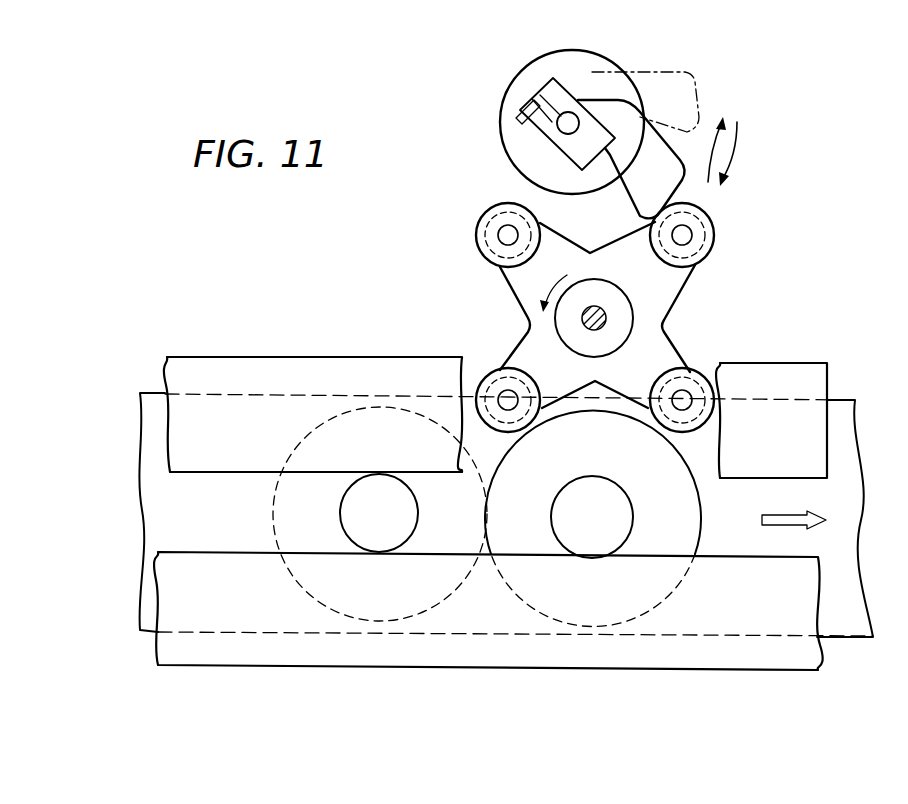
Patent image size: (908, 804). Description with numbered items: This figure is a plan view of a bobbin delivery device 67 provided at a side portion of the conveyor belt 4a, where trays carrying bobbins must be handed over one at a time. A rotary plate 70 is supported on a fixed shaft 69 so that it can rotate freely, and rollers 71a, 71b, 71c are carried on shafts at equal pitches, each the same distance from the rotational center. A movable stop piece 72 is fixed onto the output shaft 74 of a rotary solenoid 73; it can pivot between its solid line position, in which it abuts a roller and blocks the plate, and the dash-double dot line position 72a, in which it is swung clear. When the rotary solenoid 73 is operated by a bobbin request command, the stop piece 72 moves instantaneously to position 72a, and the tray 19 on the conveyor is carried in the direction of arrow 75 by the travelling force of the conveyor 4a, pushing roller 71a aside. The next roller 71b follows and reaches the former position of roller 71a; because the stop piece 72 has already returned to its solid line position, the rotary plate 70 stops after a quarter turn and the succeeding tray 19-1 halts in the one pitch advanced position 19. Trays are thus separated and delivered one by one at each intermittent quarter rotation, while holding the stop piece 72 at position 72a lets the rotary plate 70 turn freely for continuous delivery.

The conveyor belt 4a is at (155, 490).
The tray 19 is at (695, 530).
The succeeding tray 19-1 is at (443, 550).
The delivery device 67 is at (485, 284).
The fixed shaft 69 is at (606, 317).
The rotary plate 70 is at (528, 337).
The roller 71a is at (715, 243).
The roller 71b is at (490, 377).
The roller 71c is at (500, 200).
The movable stop piece 72 is at (670, 187).
The dash-double dot line position of stop piece 72a is at (685, 70).
The rotary solenoid 73 is at (583, 63).
The output shaft 74 is at (560, 122).
The arrow 75 is at (793, 513).